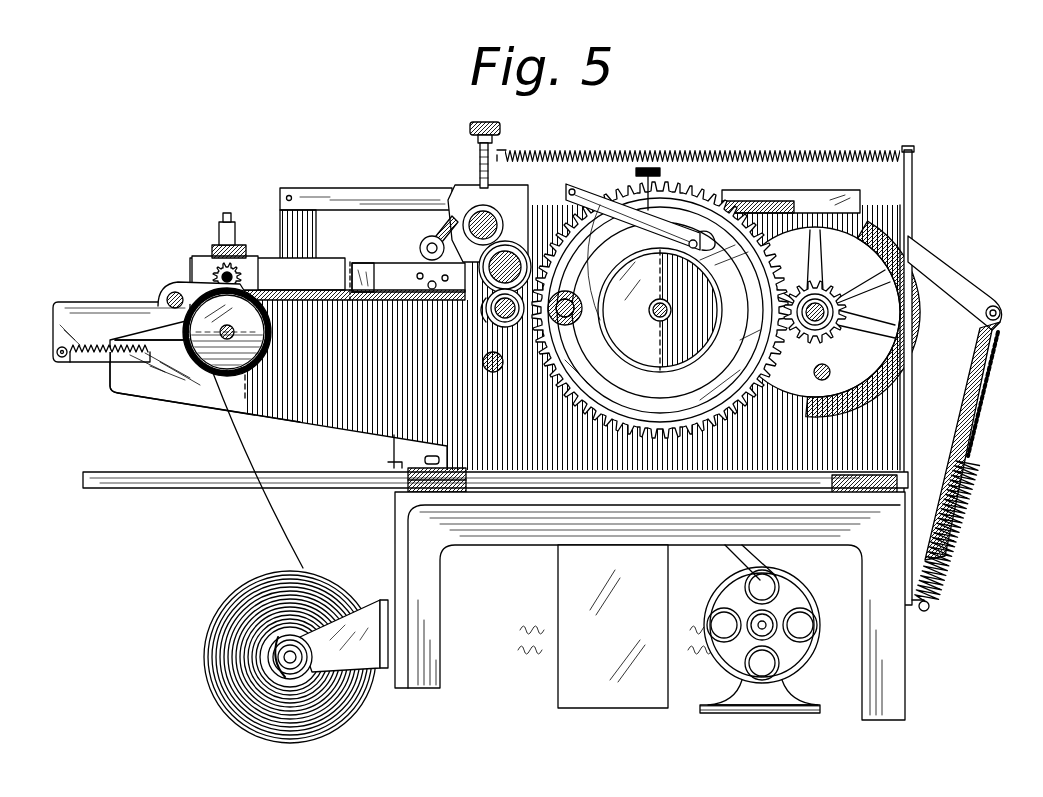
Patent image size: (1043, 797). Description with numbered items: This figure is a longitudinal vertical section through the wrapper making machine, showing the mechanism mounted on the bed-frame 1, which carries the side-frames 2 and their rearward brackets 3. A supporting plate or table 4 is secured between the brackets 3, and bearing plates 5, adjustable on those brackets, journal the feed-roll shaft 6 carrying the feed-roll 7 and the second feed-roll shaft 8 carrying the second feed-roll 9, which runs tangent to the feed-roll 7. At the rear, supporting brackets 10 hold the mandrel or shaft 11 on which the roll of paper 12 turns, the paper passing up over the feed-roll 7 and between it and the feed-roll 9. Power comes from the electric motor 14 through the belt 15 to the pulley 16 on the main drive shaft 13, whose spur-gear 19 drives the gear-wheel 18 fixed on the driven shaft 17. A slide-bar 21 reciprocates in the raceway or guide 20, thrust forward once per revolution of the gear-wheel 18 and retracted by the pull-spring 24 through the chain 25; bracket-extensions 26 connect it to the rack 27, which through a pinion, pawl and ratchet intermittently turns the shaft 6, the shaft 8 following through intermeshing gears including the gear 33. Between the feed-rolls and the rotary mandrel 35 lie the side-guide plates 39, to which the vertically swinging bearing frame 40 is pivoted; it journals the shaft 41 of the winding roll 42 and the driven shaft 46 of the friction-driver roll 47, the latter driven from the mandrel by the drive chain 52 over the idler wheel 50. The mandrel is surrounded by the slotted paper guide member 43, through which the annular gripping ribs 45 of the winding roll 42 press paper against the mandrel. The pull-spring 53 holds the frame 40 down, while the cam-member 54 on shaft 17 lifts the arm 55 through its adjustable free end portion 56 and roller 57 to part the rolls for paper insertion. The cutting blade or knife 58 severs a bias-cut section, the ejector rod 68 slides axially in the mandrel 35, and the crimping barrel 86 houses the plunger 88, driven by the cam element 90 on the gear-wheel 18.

The bed-frame 1 is at (395, 548).
The side-frames 2 is at (825, 438).
The rearward extensions or brackets 3 is at (165, 397).
The supporting plate or table 4 is at (320, 268).
The bearing plates 5 is at (195, 260).
The feed-roll shaft 6 is at (218, 330).
The feed-roll 7 is at (185, 346).
The second feed-roll shaft 8 is at (240, 270).
The second feed-roll 9 is at (170, 284).
The supporting brackets 10 is at (368, 600).
The mandrel or shaft 11 is at (282, 657).
The roll of paper 12 is at (285, 556).
The main drive shaft 13 is at (830, 298).
The electric motor 14 is at (808, 607).
The belt 15 is at (815, 570).
The pulley 16 is at (925, 312).
The driven shaft 17 is at (656, 318).
The gear-wheel 18 is at (685, 178).
The spur-gear 19 is at (850, 335).
The raceway or guide 20 is at (812, 192).
The slide-bar 21 is at (372, 188).
The pull-spring 24 is at (958, 528).
The chain 25 is at (940, 272).
The bracket-extensions 26 is at (310, 226).
The rack 27 is at (95, 345).
The gear 33 is at (212, 248).
The rotary mandrel 35 is at (488, 312).
The side-guide plates 39 is at (355, 262).
The vertically swinging bearing frame 40 is at (475, 178).
The shaft 41 is at (490, 300).
The winding roll 42 is at (525, 250).
The paper guide member 43 is at (495, 330).
The annular gripping ribs 45 is at (520, 250).
The driven shaft 46 is at (488, 212).
The friction-driver roll 47 is at (455, 195).
The idler wheel 50 is at (420, 244).
The drive chain 52 is at (442, 228).
The pull-spring 53 is at (745, 150).
The cam-member 54 is at (708, 296).
The arm 55 is at (600, 190).
The adjustable free end portion 56 is at (640, 232).
The roller 57 is at (705, 250).
The cutting blade or knife 58 is at (372, 268).
The ejector rod 68 is at (484, 318).
The barrel 86 is at (574, 315).
The plunger 88 is at (575, 295).
The cam element 90 is at (585, 368).